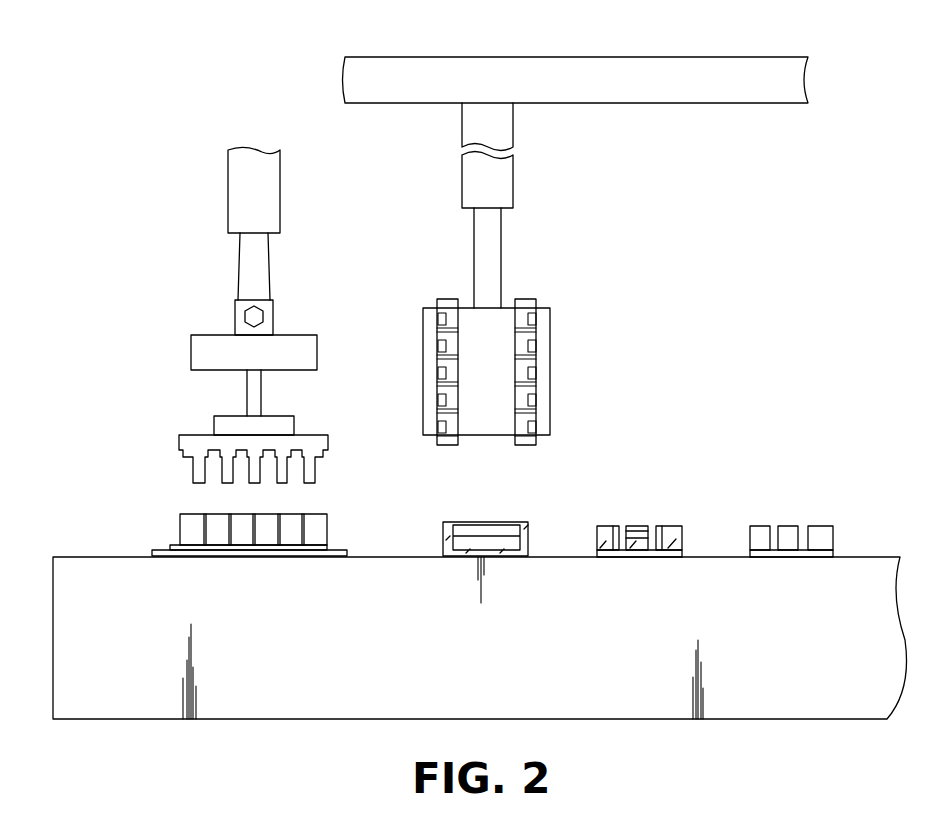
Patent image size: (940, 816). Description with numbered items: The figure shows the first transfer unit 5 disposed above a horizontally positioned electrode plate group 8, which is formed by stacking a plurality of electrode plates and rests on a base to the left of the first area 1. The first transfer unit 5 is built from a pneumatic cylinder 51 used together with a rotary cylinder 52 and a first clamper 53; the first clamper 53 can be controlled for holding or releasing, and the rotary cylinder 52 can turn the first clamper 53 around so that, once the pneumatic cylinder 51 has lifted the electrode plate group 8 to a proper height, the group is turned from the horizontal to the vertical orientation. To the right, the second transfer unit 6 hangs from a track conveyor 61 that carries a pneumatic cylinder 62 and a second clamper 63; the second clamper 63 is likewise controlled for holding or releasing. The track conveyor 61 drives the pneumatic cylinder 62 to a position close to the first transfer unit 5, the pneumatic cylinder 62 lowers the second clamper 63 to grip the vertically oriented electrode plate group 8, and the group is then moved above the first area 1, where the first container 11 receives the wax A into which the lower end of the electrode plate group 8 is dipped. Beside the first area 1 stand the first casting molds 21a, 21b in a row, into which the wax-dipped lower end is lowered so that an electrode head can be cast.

The first area 1 is at (507, 507).
The first container 11 is at (448, 530).
The wax A is at (486, 545).
The first transfer unit 5 is at (236, 315).
The pneumatic cylinder 51 is at (275, 199).
The rotary cylinder 52 is at (295, 341).
The first clamper 53 is at (188, 438).
The second transfer unit 6 is at (523, 274).
The track conveyor 61 is at (599, 70).
The pneumatic cylinder 62 is at (505, 125).
The second clamper 63 is at (536, 345).
The electrode plate group 8 is at (170, 520).
The first casting mold 21a is at (678, 533).
The first casting mold 21b is at (830, 533).